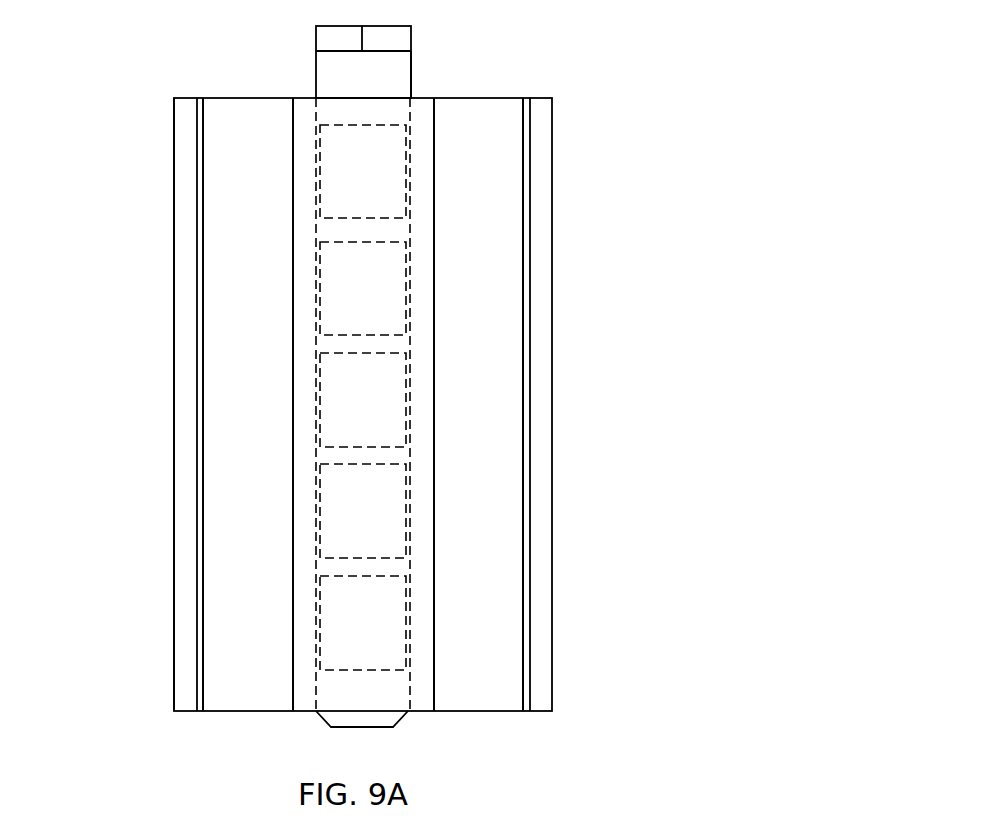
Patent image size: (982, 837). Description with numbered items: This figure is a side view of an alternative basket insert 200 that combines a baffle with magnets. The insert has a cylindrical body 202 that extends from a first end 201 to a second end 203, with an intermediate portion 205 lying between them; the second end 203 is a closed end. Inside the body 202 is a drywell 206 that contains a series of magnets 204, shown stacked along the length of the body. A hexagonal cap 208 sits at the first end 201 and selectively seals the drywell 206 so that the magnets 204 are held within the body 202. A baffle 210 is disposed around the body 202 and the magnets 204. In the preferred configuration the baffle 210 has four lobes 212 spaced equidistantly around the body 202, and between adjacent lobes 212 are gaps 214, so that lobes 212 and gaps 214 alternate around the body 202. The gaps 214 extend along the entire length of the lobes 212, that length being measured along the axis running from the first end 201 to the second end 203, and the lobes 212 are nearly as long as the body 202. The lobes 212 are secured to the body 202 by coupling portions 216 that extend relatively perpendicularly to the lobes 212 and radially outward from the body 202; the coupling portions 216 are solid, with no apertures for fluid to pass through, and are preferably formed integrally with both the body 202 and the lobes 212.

The basket insert 200 is at (578, 237).
The first end 201 is at (388, 72).
The cylindrical body 202 is at (411, 82).
The second end 203 is at (362, 727).
The magnets 204 is at (363, 177).
The intermediate portion 205 is at (434, 395).
The drywell 206 is at (345, 692).
The hexagonal cap 208 is at (338, 39).
The baffle 210 is at (174, 425).
The lobes 212 is at (183, 554).
The gaps 214 is at (248, 613).
The coupling portions 216 is at (242, 486).